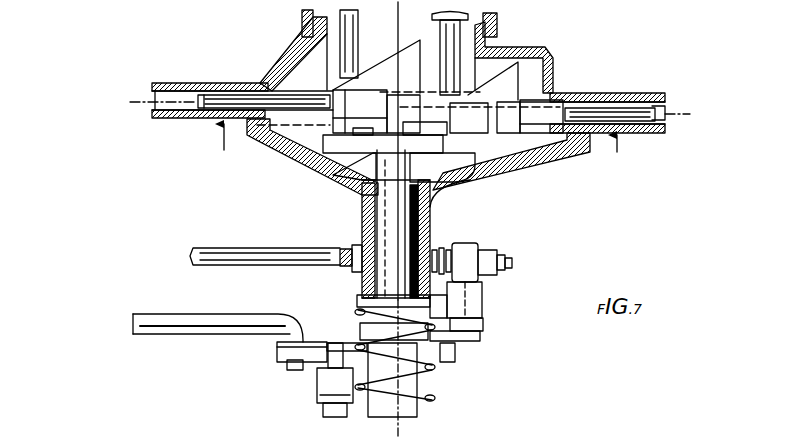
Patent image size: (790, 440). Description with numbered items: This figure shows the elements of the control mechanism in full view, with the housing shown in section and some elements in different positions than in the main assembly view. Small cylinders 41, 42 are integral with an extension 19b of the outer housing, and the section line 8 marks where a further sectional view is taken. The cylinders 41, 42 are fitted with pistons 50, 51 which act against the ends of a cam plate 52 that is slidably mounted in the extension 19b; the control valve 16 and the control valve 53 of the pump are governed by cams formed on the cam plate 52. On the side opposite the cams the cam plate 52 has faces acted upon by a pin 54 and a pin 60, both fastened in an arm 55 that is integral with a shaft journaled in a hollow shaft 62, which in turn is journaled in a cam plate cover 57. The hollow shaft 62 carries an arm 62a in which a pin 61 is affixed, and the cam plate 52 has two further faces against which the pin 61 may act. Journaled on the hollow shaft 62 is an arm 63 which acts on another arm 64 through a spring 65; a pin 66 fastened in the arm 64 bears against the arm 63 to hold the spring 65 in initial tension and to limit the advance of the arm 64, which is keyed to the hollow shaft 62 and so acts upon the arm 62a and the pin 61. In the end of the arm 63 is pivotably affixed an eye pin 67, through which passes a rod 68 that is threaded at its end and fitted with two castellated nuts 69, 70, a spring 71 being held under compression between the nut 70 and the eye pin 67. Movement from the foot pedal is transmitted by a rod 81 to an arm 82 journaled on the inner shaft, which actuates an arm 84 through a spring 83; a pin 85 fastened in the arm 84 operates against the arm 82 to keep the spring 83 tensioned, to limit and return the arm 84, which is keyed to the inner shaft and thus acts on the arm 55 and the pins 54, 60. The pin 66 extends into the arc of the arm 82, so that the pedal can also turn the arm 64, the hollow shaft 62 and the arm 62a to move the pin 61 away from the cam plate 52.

The cylinder 42 is at (170, 85).
The cylinder 41 is at (630, 93).
The extension of the outer housing 19b is at (277, 73).
The control valve of the pump 53 is at (353, 28).
The control valve 16 is at (440, 24).
The cam plate 52 is at (513, 72).
The piston 51 is at (210, 106).
The piston 50 is at (632, 128).
The section line 8 is at (412, 146).
The pin 54 is at (322, 130).
The arm 55 is at (385, 138).
The arm 62a is at (404, 167).
The pin 61 is at (507, 127).
The cam plate cover 57 is at (310, 167).
The pin 60 is at (453, 135).
The hollow shaft 62 is at (362, 207).
The rod 68 is at (240, 260).
The castellated nut 70 is at (352, 268).
The spring 71 is at (444, 250).
The eye pin 67 is at (465, 250).
The castellated nut 69 is at (496, 250).
The arm 63 is at (478, 300).
The arm 64 is at (460, 330).
The spring 65 is at (455, 337).
The pin 66 is at (450, 362).
The rod 81 is at (242, 335).
The arm 82 is at (280, 348).
The pin 85 is at (335, 345).
The arm 84 is at (320, 382).
The spring 83 is at (325, 408).